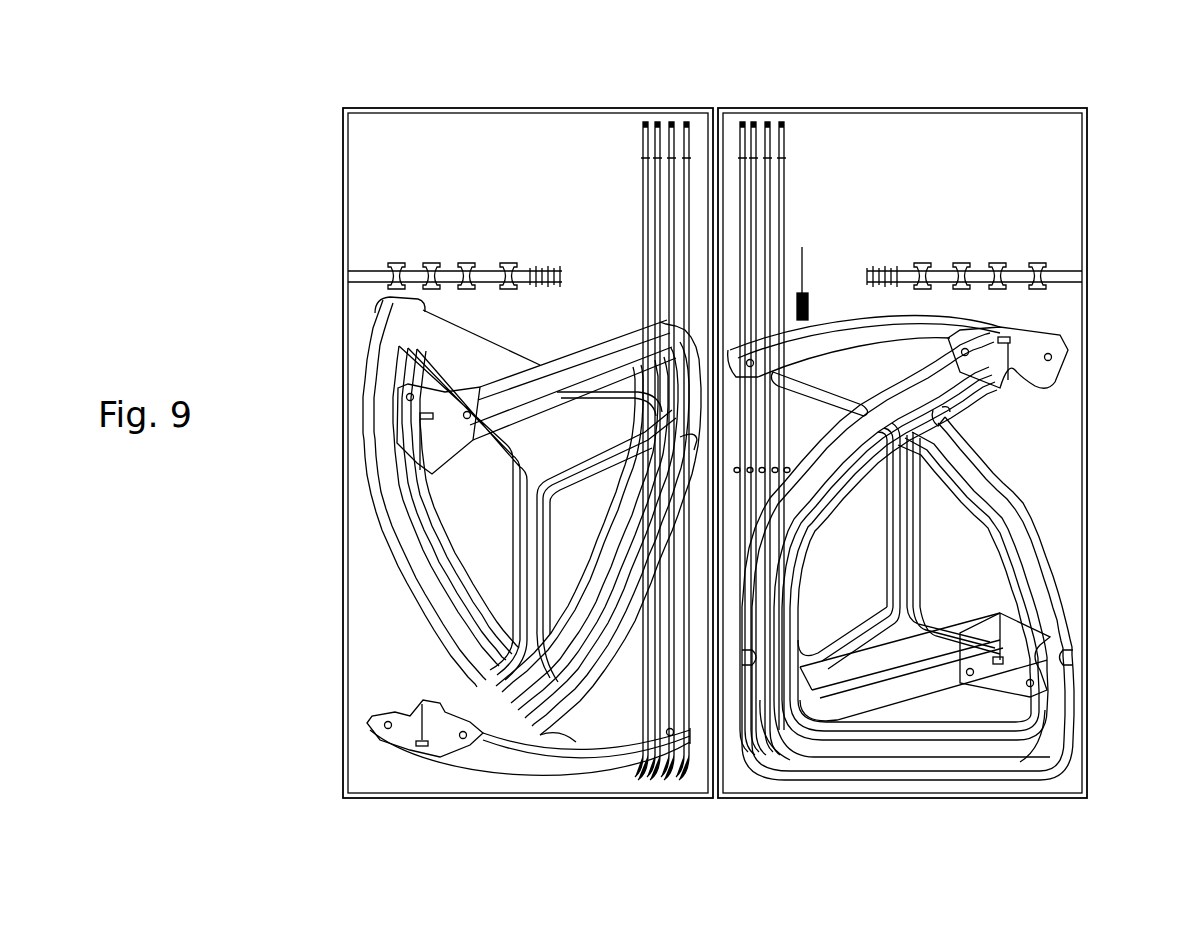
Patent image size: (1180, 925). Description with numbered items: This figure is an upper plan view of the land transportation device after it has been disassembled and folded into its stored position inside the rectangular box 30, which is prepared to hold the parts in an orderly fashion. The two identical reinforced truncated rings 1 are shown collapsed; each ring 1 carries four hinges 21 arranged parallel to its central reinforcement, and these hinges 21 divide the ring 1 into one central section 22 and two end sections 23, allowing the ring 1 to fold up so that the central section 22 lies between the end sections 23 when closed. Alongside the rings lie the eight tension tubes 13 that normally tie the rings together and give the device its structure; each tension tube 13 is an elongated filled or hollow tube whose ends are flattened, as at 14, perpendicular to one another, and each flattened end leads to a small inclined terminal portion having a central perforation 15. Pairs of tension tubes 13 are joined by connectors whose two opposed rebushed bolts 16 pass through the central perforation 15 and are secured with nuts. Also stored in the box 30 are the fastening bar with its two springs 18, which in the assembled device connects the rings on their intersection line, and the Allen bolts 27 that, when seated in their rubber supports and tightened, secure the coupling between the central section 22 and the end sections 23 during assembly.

The truncated ring 1 is at (393, 583).
The tension tube 13 is at (737, 168).
The flattened end 14 is at (750, 140).
The central perforation 15 is at (767, 135).
The rebushed bolt 16 is at (388, 154).
The spring 18 is at (803, 247).
The hinge 21 is at (1007, 337).
The central section 22 is at (913, 637).
The end section 23 is at (805, 762).
The Allen bolt 27 is at (532, 268).
The rectangular box 30 is at (413, 185).